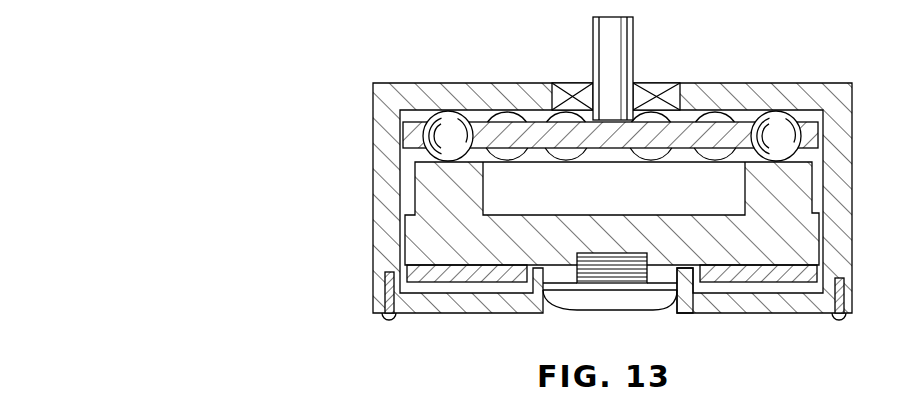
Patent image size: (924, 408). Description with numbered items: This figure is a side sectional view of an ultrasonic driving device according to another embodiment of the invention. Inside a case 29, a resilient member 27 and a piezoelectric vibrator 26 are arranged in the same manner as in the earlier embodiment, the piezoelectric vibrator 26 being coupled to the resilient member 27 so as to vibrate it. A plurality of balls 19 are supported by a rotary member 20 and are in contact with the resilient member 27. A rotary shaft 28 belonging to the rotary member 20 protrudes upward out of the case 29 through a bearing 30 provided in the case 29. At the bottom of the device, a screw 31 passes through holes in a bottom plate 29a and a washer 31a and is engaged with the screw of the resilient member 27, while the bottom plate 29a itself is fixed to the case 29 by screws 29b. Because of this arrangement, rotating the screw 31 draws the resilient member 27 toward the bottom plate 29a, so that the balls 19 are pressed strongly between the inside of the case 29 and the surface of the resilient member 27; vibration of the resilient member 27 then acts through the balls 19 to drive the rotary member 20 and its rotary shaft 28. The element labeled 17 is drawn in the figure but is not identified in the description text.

The cover plate 17 is at (475, 285).
The balls 19 is at (452, 125).
The rotary member 20 is at (808, 135).
The piezoelectric vibrator 26 is at (762, 284).
The resilient member 27 is at (808, 221).
The rotary shaft 28 is at (626, 38).
The case 29 is at (378, 234).
The bottom plate 29a is at (692, 312).
The screws 29b is at (390, 300).
The bearing 30 is at (570, 88).
The screw 31 is at (633, 300).
The washer 31a is at (578, 284).